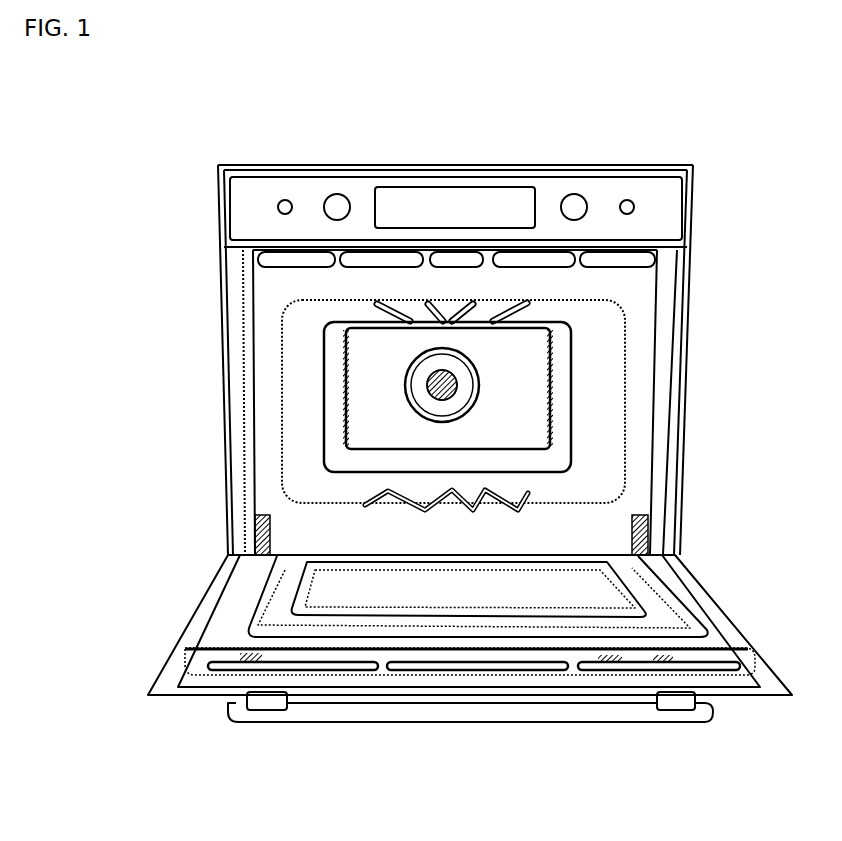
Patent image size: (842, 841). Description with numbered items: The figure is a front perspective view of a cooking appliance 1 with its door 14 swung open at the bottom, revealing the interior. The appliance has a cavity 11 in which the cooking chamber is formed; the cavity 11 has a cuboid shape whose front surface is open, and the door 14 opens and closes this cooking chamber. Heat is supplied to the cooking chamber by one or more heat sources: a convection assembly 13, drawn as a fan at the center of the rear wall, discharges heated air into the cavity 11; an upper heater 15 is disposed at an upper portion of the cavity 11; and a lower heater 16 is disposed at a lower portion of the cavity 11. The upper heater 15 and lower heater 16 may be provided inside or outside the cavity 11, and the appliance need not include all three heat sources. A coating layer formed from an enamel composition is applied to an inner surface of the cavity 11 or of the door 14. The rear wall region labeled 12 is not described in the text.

The cooking appliance 1 is at (168, 135).
The cavity 11 is at (322, 322).
The rear wall of cooking chamber 12 is at (320, 303).
The convection assembly 13 is at (388, 387).
The door 14 is at (176, 615).
The upper heater 15 is at (535, 311).
The lower heater 16 is at (540, 497).